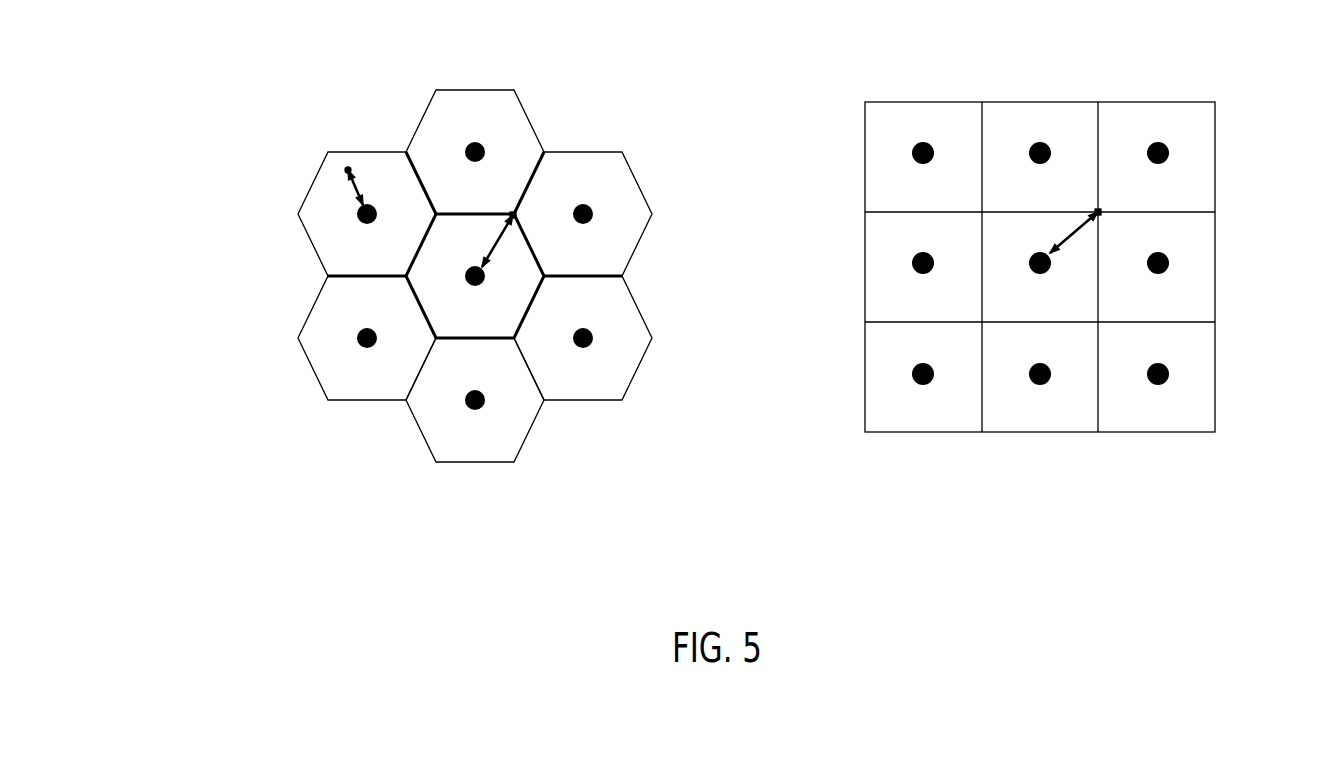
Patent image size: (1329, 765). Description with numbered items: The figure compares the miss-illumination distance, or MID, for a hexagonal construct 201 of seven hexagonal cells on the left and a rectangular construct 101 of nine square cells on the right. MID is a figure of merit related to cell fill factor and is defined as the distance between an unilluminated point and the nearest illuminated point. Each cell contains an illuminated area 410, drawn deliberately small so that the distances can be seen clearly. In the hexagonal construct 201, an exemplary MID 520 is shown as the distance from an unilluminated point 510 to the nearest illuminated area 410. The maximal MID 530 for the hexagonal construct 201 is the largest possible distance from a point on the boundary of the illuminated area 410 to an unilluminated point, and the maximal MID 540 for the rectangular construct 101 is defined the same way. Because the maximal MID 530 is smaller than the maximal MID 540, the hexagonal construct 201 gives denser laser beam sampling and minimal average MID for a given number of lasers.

The hexagonal construct 201 is at (600, 155).
The rectangular construct 101 is at (1162, 105).
The illuminated area 410 is at (348, 228).
The unilluminated point 510 is at (333, 164).
The exemplary MID 520 is at (346, 193).
The maximal MID for the hexagonal construct 530 is at (507, 250).
The maximal MID for the rectangular construct 540 is at (1055, 231).